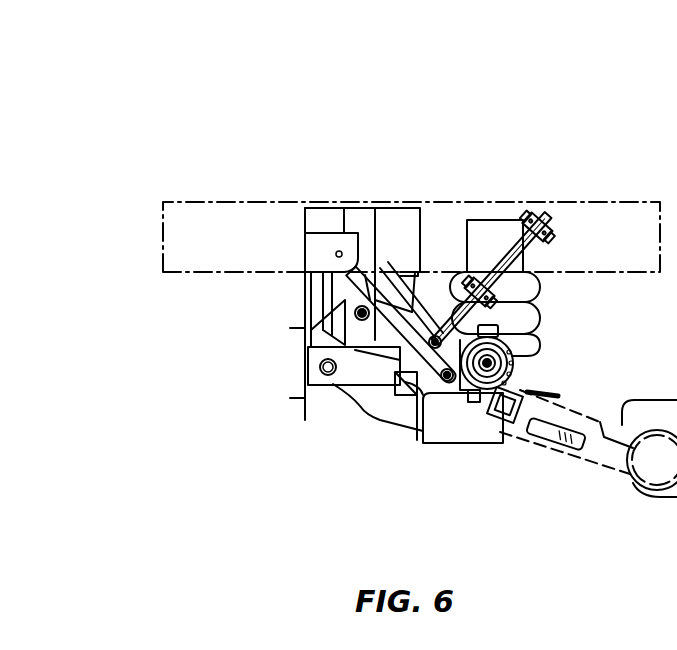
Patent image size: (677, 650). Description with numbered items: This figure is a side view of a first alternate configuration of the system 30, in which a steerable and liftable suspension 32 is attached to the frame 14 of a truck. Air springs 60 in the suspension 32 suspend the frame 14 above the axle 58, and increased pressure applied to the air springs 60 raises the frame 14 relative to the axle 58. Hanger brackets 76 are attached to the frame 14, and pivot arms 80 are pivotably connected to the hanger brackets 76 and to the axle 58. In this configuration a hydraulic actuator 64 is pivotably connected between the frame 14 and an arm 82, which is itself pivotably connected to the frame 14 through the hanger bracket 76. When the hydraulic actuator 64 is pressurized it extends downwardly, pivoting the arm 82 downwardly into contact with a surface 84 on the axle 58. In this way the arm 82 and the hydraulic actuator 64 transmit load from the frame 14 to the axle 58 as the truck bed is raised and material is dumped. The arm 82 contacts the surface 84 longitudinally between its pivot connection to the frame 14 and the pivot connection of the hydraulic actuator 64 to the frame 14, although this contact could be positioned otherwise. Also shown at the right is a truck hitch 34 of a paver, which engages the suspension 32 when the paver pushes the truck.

The system 30 is at (301, 106).
The frame 14 is at (185, 200).
The hanger bracket 76 is at (305, 306).
The pivot arm 80 is at (345, 390).
The arm 82 is at (348, 387).
The surface 84 is at (408, 390).
The axle 58 is at (475, 447).
The air springs 60 is at (545, 320).
The hydraulic actuator 64 is at (545, 255).
The suspension 32 is at (565, 366).
The truck hitch 34 is at (628, 482).